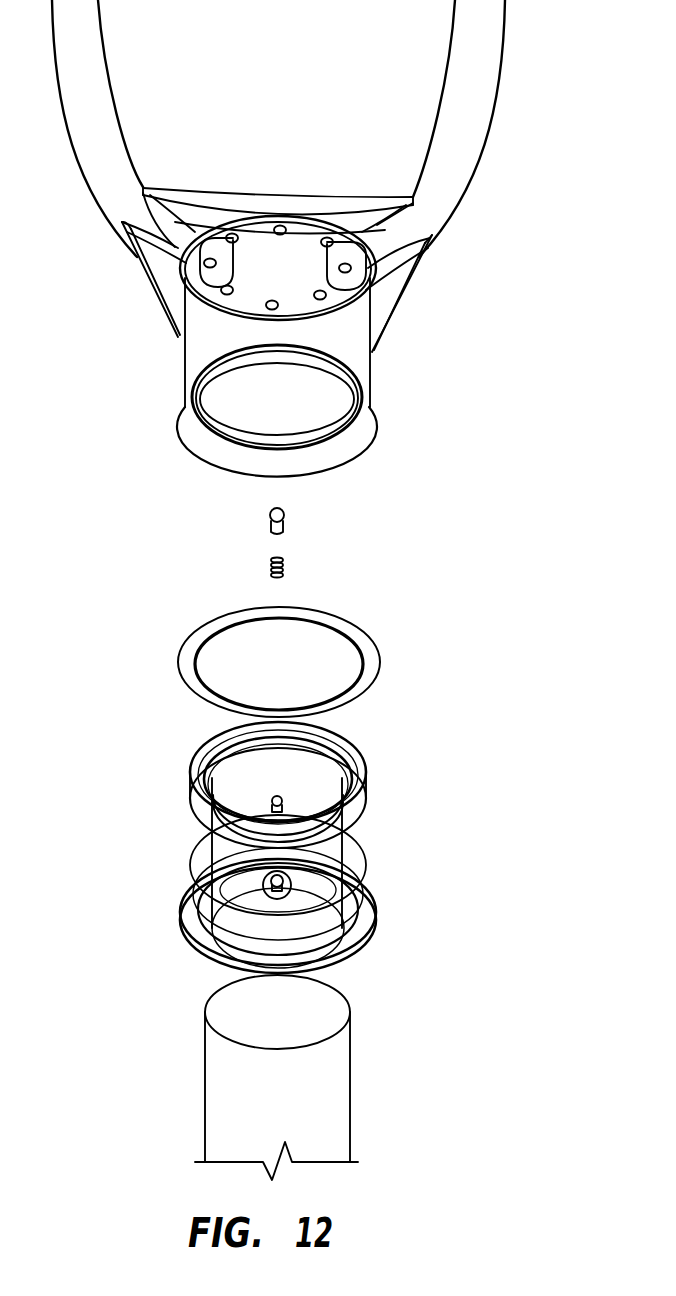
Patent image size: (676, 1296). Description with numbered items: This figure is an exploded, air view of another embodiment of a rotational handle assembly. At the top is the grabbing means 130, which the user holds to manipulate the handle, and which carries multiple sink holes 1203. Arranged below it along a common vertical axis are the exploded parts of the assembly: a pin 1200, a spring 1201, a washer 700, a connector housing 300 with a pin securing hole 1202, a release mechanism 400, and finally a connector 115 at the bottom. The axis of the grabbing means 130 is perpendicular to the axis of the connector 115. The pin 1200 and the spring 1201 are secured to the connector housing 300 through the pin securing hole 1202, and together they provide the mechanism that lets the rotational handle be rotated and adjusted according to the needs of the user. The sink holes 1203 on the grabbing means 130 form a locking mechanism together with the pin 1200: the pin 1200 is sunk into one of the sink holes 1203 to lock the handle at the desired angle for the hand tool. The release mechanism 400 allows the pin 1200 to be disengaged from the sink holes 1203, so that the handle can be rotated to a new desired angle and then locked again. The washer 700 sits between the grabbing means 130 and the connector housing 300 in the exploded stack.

The grabbing means 130 is at (462, 197).
The sink holes 1203 is at (226, 242).
The pin 1200 is at (287, 525).
The spring 1201 is at (270, 563).
The washer 700 is at (380, 665).
The connector housing 300 is at (363, 838).
The pin securing hole 1202 is at (212, 812).
The release mechanism 400 is at (215, 879).
The connector 115 is at (352, 1050).